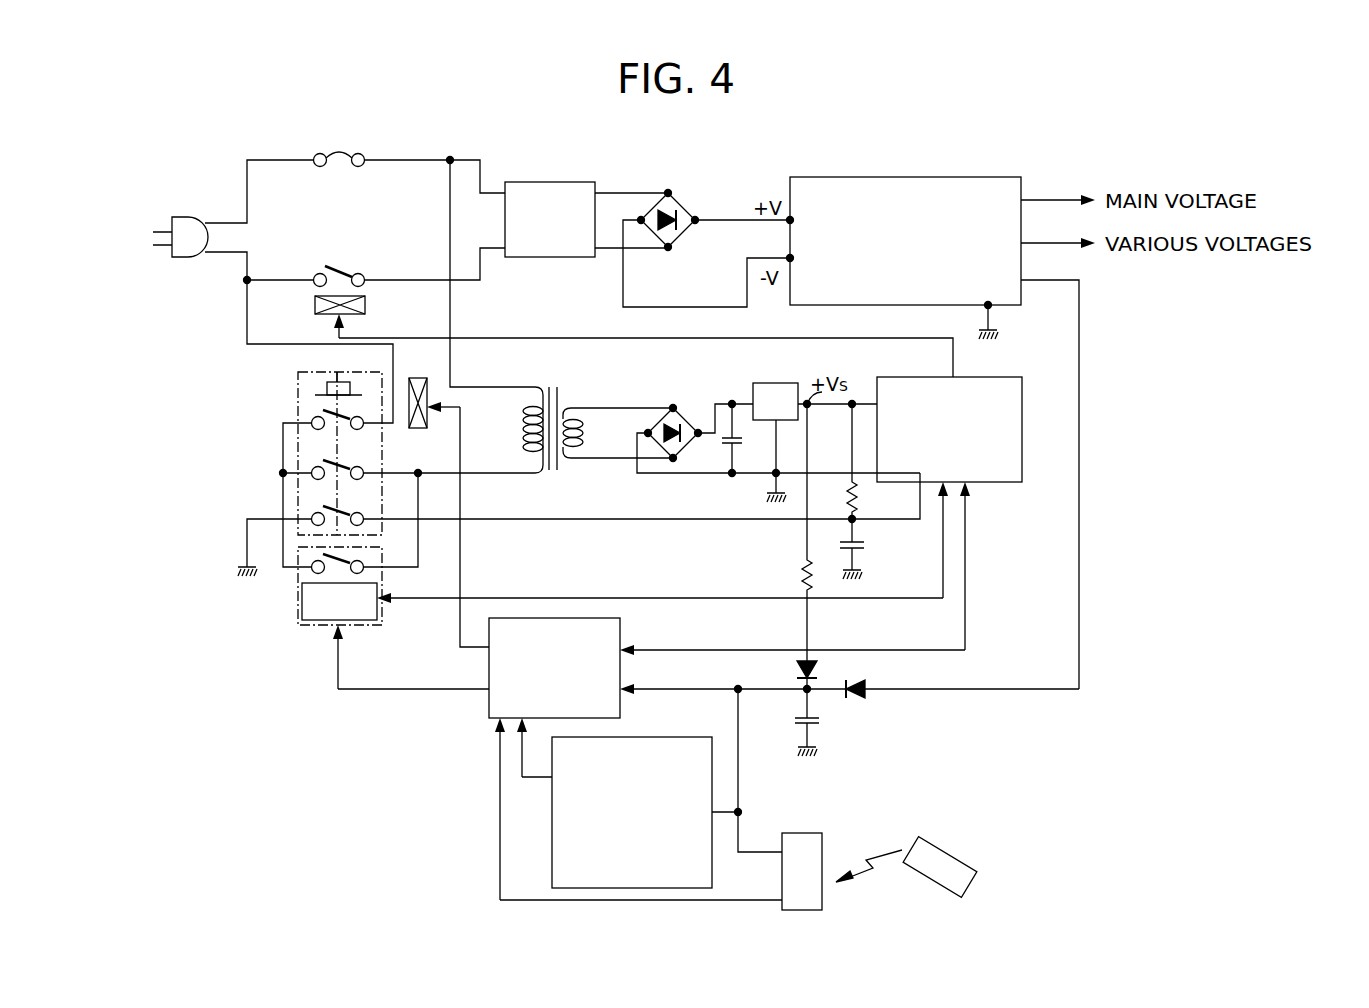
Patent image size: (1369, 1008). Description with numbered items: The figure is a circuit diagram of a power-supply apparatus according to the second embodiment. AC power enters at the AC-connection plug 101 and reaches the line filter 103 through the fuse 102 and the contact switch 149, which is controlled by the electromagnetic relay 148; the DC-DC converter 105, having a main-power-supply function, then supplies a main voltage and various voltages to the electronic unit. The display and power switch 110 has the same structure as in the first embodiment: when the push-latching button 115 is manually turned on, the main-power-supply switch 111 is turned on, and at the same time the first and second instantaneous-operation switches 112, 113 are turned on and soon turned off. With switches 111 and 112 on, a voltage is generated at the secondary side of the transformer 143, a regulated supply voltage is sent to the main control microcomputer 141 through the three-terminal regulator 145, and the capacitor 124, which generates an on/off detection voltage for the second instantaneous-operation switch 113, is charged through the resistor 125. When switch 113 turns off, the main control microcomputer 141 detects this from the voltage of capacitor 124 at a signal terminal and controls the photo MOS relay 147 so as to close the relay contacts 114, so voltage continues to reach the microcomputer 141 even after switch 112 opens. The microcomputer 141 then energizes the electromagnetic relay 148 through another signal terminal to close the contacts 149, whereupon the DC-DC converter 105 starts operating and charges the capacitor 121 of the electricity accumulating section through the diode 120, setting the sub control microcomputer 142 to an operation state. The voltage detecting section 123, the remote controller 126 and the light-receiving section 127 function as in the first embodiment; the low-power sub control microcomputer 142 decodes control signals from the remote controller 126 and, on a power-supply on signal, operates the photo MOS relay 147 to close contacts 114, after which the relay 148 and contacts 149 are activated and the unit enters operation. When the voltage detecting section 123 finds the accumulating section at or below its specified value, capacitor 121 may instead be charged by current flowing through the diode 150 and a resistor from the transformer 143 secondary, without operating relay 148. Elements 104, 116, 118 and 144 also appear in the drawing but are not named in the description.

The AC-connection plug 101 is at (183, 217).
The fuse 102 is at (340, 152).
The line filter 103 is at (535, 182).
The rectifier 104 is at (683, 240).
The DC-DC converter 105 is at (887, 177).
The display and power switch 110 is at (296, 382).
The main-power-supply switch 111 is at (315, 412).
The first instantaneous-operation switch 112 is at (326, 460).
The second instantaneous-operation switch 113 is at (326, 507).
The relay contacts 114 is at (333, 571).
The push-latching button 115 is at (336, 382).
The relay 116 is at (418, 428).
The switching section 118 is at (298, 630).
The diode 120 is at (865, 686).
The capacitor 121 is at (822, 724).
The voltage detecting section 123 is at (694, 737).
The capacitor 124 is at (866, 548).
The resistor 125 is at (858, 503).
The remote controller 126 is at (958, 852).
The light-receiving section 127 is at (805, 833).
The main control microcomputer 141 is at (1012, 485).
The sub control microcomputer 142 is at (622, 627).
The transformer 143 is at (563, 402).
The rectifier 144 is at (685, 412).
The three-terminal regulator 145 is at (775, 383).
The photo MOS relay 147 is at (352, 620).
The electromagnetic relay 148 is at (366, 305).
The contact switch 149 is at (347, 267).
The diode 150 is at (797, 668).